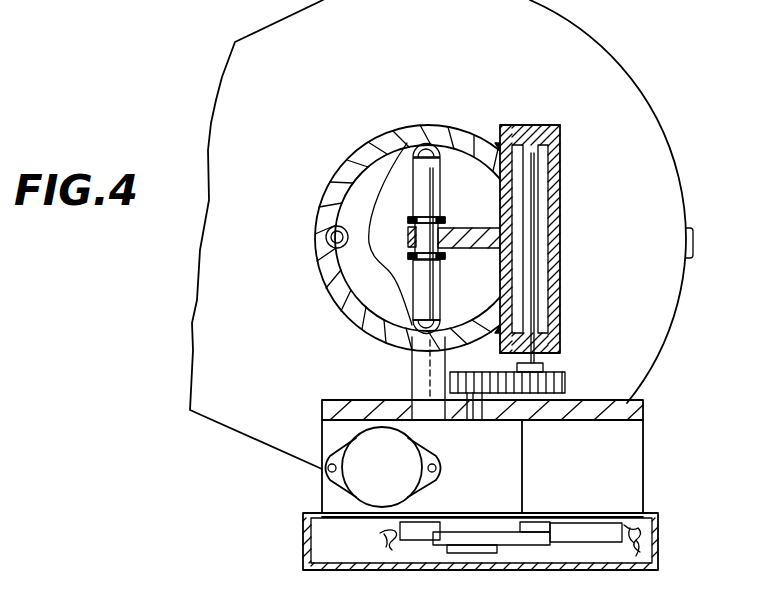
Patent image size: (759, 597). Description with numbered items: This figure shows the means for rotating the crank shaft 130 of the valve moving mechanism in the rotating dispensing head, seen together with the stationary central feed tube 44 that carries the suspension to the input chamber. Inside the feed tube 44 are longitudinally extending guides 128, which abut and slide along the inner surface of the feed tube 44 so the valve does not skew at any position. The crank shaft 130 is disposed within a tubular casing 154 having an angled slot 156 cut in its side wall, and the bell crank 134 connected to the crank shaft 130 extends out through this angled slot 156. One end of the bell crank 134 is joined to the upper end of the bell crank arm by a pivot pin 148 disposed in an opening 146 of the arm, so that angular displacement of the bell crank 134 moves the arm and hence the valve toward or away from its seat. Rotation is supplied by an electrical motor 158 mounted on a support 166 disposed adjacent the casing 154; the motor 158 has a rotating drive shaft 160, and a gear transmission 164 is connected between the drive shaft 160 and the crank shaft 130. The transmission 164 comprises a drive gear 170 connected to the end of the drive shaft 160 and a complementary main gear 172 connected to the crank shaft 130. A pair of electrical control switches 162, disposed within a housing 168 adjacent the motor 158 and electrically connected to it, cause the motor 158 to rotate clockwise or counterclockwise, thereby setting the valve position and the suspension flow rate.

The central feed tube 44 is at (361, 146).
The longitudinally extending guides 128 is at (369, 235).
The crank shaft 130 is at (530, 298).
The bell crank 134 is at (492, 230).
The opening 146 is at (451, 239).
The pivot pin 148 is at (420, 235).
The tubular casing 154 is at (558, 260).
The angled slot 156 is at (502, 258).
The electrical motor 158 is at (325, 492).
The rotating drive shaft 160 is at (467, 423).
The electrical control switches 162 is at (423, 528).
The gear transmission 164 is at (450, 378).
The support 166 is at (640, 405).
The housing 168 is at (653, 543).
The drive gear 170 is at (477, 410).
The main gear 172 is at (560, 371).